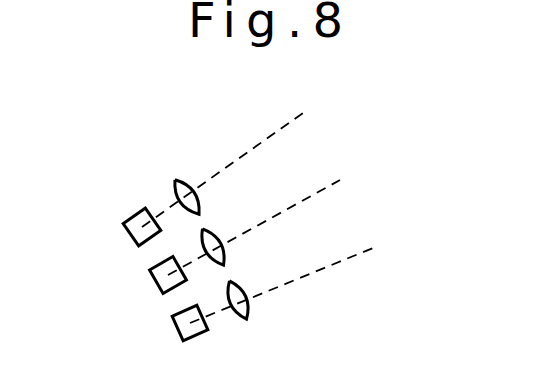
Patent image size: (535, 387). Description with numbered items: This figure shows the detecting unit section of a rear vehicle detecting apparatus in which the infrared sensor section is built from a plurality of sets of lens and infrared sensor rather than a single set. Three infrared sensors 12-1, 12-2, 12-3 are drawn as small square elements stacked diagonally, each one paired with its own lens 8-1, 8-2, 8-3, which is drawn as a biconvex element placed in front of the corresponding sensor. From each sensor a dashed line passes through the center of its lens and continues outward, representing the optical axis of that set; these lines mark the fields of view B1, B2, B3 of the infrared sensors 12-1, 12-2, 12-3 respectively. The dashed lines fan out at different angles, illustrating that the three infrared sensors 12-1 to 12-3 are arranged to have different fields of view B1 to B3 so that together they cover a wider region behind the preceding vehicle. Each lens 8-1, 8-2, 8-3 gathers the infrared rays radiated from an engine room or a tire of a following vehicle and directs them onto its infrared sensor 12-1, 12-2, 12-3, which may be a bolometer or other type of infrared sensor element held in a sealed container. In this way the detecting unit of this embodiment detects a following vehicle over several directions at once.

The infrared sensor 12-1 is at (174, 321).
The infrared sensor 12-2 is at (153, 279).
The infrared sensor 12-3 is at (133, 242).
The lens 8-1 is at (247, 316).
The lens 8-2 is at (226, 252).
The lens 8-3 is at (200, 201).
The field of view B1 is at (299, 279).
The field of view B2 is at (272, 217).
The field of view B3 is at (239, 159).